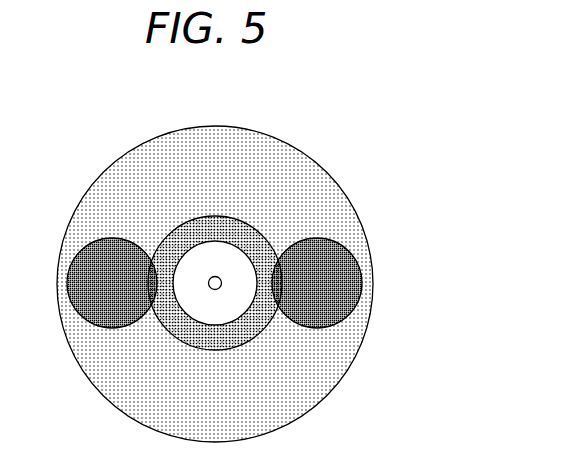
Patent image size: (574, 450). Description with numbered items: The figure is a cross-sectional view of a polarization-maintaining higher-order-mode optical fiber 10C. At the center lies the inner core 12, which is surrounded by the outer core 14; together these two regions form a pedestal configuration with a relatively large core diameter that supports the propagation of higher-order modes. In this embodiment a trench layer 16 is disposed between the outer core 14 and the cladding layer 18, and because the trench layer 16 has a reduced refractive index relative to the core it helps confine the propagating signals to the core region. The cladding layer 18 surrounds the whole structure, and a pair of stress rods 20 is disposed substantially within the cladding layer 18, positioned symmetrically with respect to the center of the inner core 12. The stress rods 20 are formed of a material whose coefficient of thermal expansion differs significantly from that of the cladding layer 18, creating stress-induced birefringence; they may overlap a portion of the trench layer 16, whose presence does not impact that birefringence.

The PM-HOM optical fiber 10C is at (425, 148).
The inner core 12 is at (218, 273).
The outer core 14 is at (183, 234).
The trench layer 16 is at (265, 323).
The cladding layer 18 is at (135, 382).
The stress rods 20 is at (345, 283).